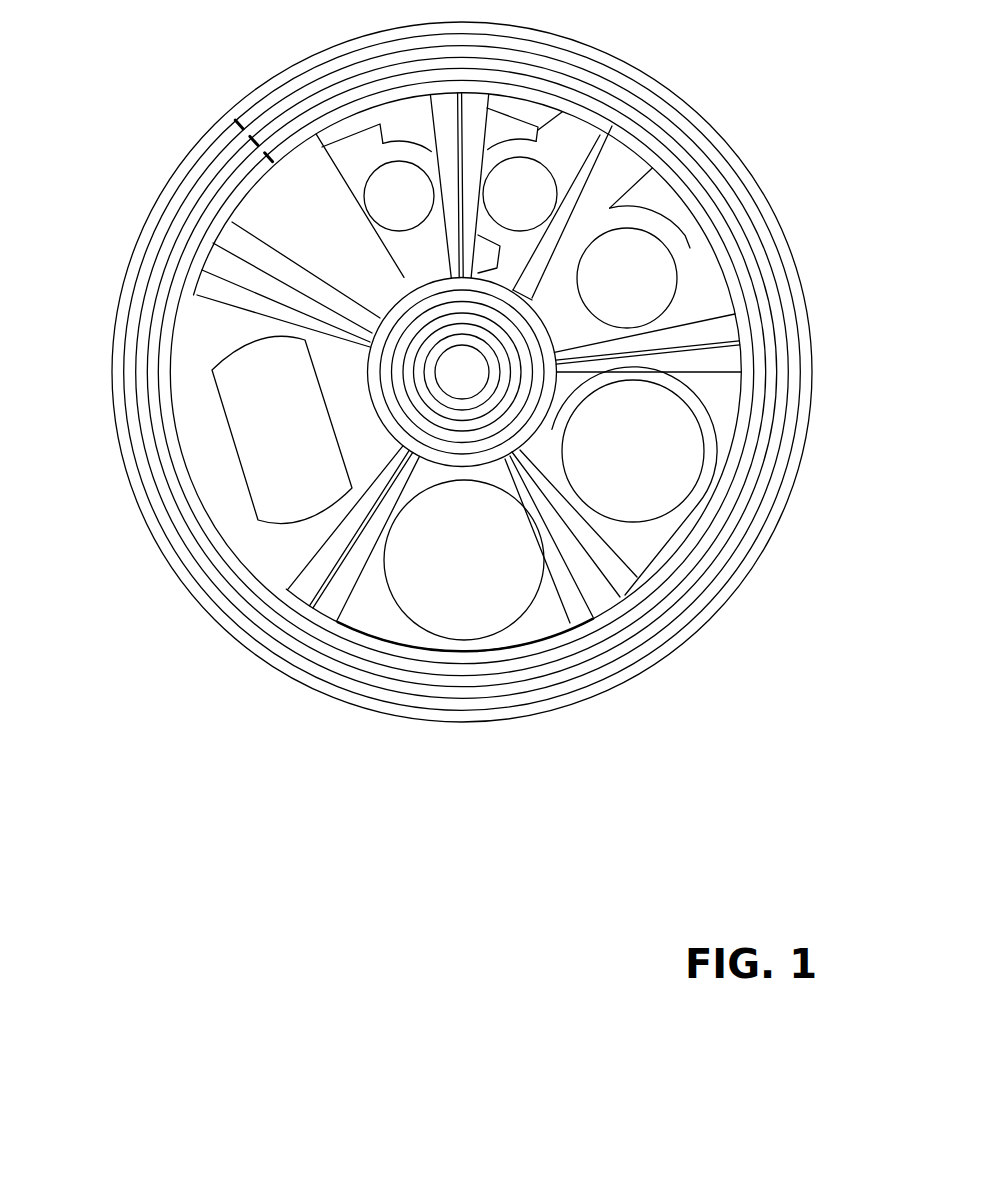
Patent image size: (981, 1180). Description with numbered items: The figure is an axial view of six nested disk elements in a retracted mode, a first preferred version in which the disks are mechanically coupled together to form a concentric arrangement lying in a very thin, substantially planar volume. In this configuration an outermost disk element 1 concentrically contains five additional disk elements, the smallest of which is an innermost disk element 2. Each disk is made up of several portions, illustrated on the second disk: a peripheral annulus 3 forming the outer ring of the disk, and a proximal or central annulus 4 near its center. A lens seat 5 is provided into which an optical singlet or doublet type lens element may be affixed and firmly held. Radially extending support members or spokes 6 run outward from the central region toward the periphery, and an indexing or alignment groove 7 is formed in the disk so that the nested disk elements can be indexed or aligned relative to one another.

The outermost disk element 1 is at (580, 42).
The innermost disk element 2 is at (258, 173).
The peripheral annulus 3 is at (724, 572).
The proximal or central annulus 4 is at (432, 442).
The lens seat 5 is at (672, 294).
The radially extending support members or spokes 6 is at (250, 303).
The indexing or alignment groove 7 is at (543, 130).